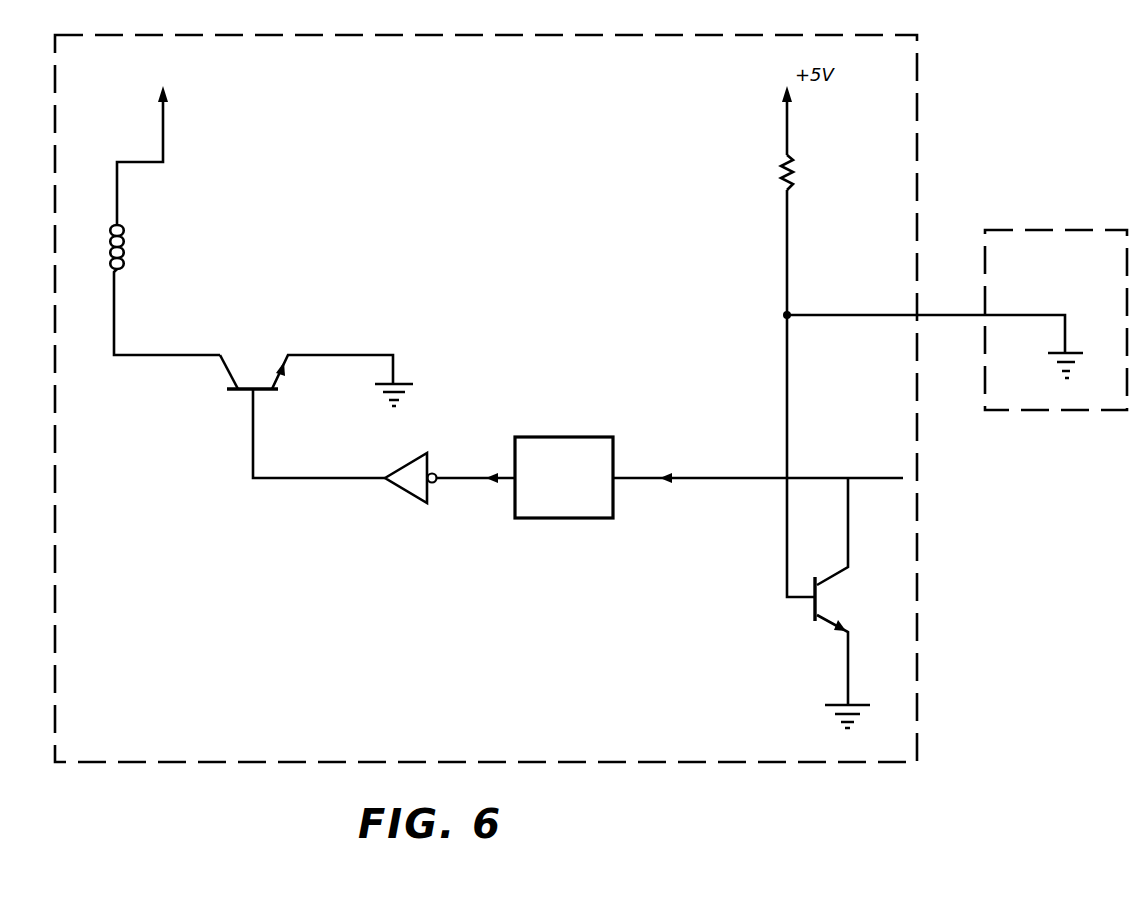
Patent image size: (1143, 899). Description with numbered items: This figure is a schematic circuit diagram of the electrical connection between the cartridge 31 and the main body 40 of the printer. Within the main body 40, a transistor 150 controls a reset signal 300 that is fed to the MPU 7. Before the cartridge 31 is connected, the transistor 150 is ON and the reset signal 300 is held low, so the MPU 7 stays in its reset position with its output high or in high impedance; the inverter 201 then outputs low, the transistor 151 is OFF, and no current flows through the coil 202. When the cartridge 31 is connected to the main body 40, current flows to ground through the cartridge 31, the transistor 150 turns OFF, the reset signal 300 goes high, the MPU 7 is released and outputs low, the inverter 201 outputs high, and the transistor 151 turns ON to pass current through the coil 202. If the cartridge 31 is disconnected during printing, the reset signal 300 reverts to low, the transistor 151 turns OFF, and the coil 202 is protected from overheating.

The MPU 7 is at (565, 445).
The cartridge 31 is at (1010, 236).
The main body 40 is at (222, 750).
The transistor 150 is at (820, 622).
The transistor 151 is at (250, 392).
The inverter 201 is at (413, 490).
The coil 202 is at (115, 236).
The reset signal 300 is at (738, 478).